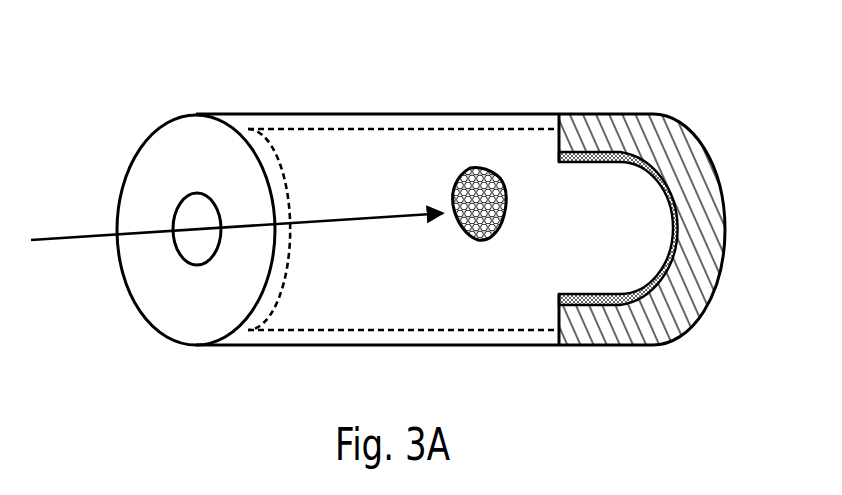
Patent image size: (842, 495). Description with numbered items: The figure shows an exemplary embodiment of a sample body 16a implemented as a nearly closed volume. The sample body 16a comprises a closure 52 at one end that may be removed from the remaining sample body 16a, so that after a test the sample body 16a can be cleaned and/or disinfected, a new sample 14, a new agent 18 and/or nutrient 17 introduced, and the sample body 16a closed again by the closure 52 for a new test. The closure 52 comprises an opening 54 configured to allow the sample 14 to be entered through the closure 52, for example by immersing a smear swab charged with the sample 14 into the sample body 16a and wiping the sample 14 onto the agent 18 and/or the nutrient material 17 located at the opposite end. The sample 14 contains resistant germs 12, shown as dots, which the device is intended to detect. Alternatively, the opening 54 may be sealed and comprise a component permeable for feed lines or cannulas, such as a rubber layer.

The sample body 16a is at (474, 77).
The closure 52 is at (193, 127).
The opening 54 is at (187, 214).
The resistant germs 12 is at (468, 200).
The sample 14 is at (487, 242).
The nutrient medium 17 is at (637, 172).
The agent 18 is at (694, 160).